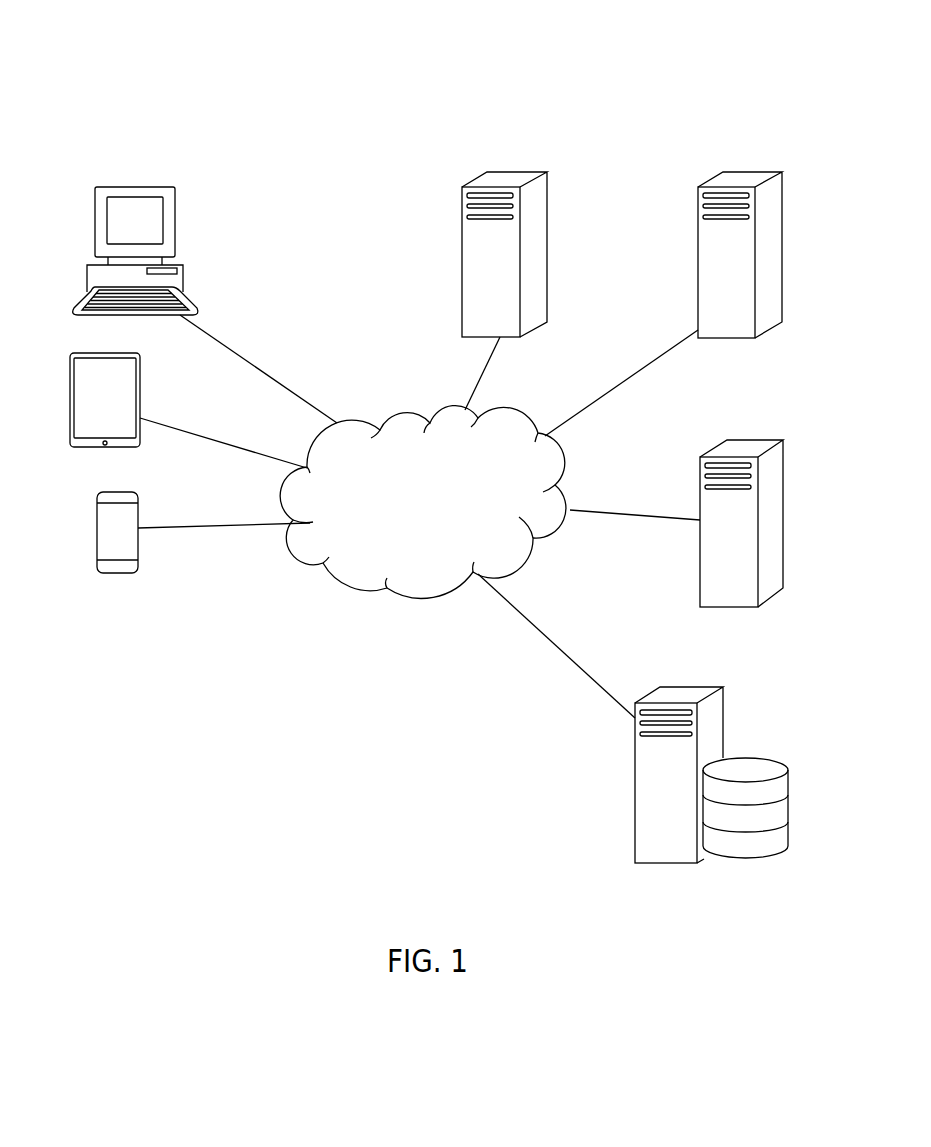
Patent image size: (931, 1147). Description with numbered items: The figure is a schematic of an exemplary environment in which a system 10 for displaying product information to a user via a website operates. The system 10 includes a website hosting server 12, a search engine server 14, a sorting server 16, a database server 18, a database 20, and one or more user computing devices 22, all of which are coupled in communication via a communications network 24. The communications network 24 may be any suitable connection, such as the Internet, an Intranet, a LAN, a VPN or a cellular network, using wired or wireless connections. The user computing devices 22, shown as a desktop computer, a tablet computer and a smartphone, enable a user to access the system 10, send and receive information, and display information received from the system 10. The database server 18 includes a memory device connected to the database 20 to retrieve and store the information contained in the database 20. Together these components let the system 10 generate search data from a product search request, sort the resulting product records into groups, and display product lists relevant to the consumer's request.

The system 10 is at (601, 46).
The website hosting server 12 is at (556, 164).
The search engine server 14 is at (789, 162).
The sorting server 16 is at (783, 431).
The database server 18 is at (737, 700).
The database 20 is at (790, 756).
The user computing device 22 is at (97, 187).
The communications network 24 is at (433, 506).